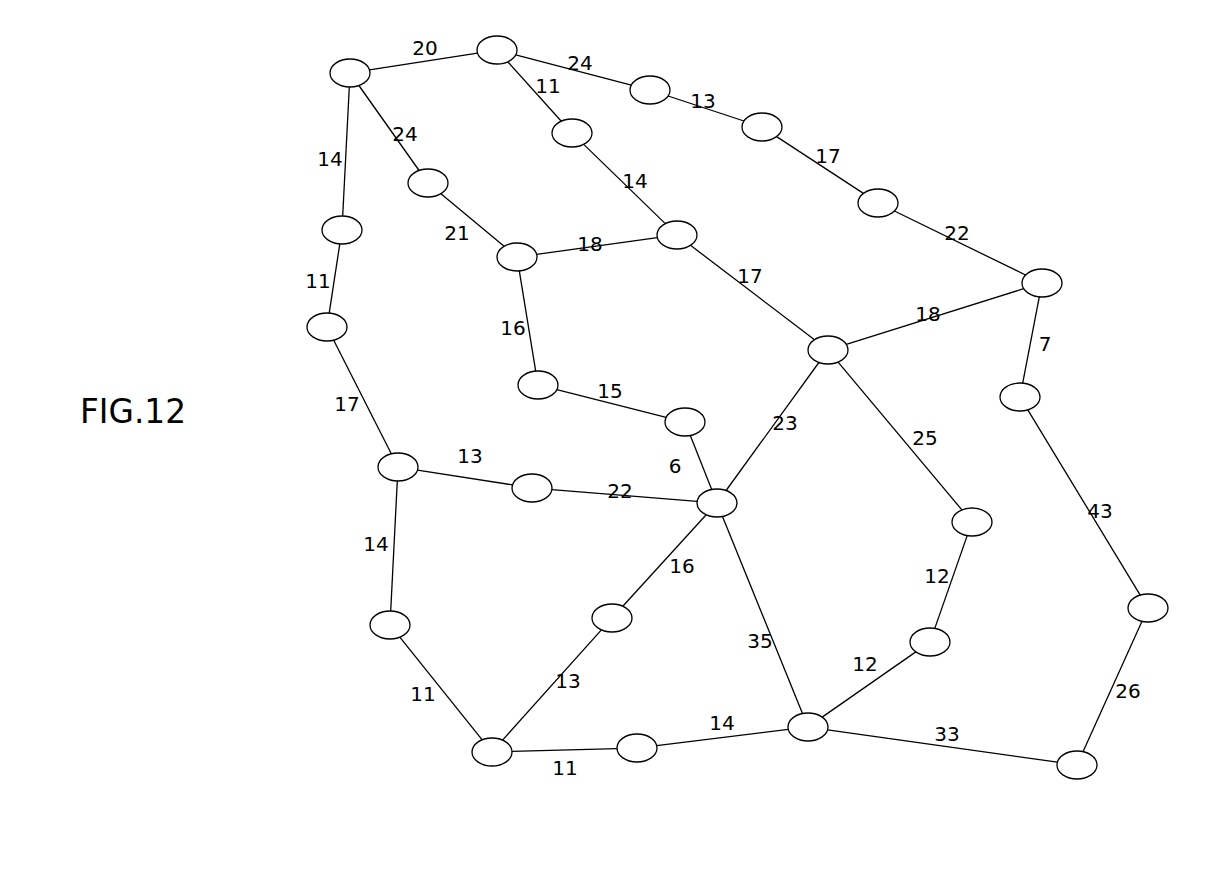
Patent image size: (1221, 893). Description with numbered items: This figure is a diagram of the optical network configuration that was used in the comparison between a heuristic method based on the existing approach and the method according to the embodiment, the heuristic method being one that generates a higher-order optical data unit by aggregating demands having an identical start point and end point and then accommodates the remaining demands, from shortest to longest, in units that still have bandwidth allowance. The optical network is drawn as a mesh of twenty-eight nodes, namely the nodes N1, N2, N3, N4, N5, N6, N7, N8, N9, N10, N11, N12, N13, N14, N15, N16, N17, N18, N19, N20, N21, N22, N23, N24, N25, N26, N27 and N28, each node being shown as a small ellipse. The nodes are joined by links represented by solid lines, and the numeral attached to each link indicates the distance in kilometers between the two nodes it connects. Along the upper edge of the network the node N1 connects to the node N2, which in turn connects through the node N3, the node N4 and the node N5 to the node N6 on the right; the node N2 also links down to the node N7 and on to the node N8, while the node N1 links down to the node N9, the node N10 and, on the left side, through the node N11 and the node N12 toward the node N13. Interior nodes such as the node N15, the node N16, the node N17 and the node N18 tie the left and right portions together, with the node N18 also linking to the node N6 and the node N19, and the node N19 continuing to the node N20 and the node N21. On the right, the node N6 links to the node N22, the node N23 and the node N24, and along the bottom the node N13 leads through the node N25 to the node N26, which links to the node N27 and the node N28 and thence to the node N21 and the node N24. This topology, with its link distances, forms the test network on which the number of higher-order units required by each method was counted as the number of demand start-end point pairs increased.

The node N1 is at (350, 60).
The node N2 is at (497, 39).
The node N3 is at (650, 77).
The node N4 is at (762, 114).
The node N5 is at (878, 190).
The node N6 is at (1042, 270).
The node N7 is at (586, 133).
The node N8 is at (677, 223).
The node N9 is at (443, 183).
The node N10 is at (517, 245).
The node N11 is at (320, 230).
The node N12 is at (304, 327).
The node N13 is at (377, 467).
The node N14 is at (532, 477).
The node N15 is at (551, 374).
The node N16 is at (684, 411).
The node N17 is at (737, 503).
The node N18 is at (829, 339).
The node N19 is at (993, 522).
The node N20 is at (952, 642).
The node N21 is at (808, 739).
The node N22 is at (1041, 397).
The node N23 is at (1169, 608).
The node N24 is at (1097, 767).
The node N25 is at (369, 625).
The node N26 is at (491, 765).
The node N27 is at (606, 606).
The node N28 is at (637, 761).